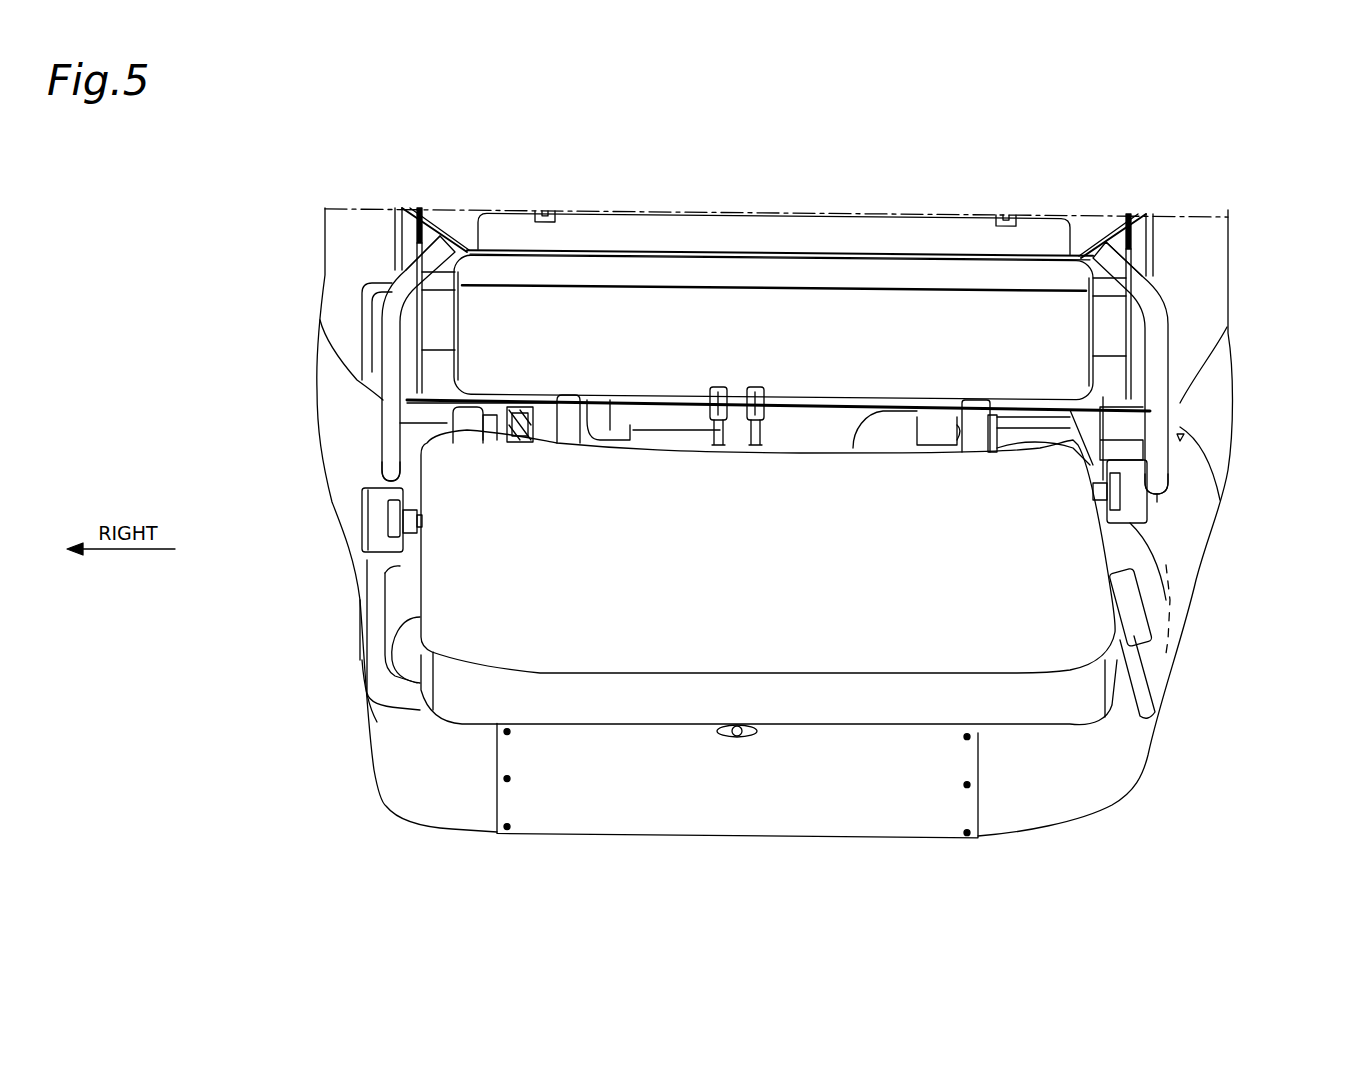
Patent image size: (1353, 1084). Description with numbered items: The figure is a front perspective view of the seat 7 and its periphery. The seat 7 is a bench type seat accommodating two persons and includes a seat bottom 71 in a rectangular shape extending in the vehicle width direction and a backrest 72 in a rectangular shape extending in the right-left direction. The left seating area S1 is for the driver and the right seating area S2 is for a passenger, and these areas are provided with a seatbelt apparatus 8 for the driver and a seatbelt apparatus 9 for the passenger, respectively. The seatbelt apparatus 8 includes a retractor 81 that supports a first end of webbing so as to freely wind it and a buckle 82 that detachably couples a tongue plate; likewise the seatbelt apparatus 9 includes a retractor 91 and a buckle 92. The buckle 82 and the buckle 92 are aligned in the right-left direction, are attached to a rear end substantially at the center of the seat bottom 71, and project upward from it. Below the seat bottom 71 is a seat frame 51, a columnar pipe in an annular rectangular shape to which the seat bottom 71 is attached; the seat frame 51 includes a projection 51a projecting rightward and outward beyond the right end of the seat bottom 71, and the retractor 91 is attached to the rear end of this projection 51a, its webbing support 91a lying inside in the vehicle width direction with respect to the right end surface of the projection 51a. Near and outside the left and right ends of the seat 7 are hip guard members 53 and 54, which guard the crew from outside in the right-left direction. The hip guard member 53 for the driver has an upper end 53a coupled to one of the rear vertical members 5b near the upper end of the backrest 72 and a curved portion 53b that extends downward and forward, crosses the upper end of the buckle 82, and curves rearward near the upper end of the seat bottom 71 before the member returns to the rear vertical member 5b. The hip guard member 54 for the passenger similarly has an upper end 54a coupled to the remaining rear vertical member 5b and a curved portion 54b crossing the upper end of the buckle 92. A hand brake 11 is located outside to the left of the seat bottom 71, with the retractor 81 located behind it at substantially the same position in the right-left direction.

The rear vertical member 5b is at (452, 220).
The seat 7 is at (769, 667).
The seatbelt apparatus 8 is at (1195, 511).
The seatbelt apparatus 9 is at (330, 577).
The hand brake 11 is at (1143, 683).
The seat frame 51 is at (380, 695).
The projection 51a is at (377, 638).
The hip guard member 53 is at (1192, 332).
The upper end 53a is at (1147, 262).
The curved portion 53b is at (1173, 503).
The hip guard member 54 is at (366, 332).
The upper end 54a is at (398, 250).
The curved portion 54b is at (380, 477).
The seat bottom 71 is at (658, 637).
The backrest 72 is at (737, 312).
The retractor 81 is at (1130, 508).
The buckle 82 is at (753, 393).
The retractor 91 is at (378, 532).
The webbing support 91a is at (395, 510).
The buckle 92 is at (717, 393).
The left seating area S1 is at (856, 571).
The right seating area S2 is at (624, 571).